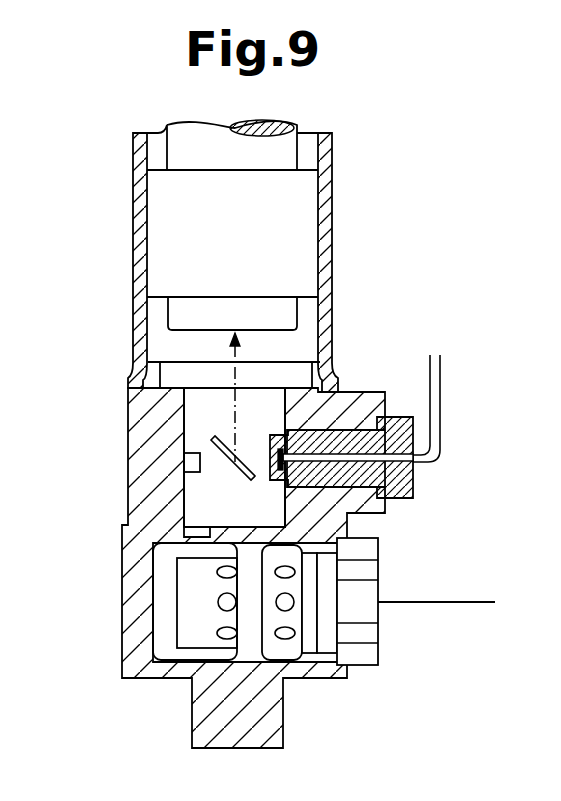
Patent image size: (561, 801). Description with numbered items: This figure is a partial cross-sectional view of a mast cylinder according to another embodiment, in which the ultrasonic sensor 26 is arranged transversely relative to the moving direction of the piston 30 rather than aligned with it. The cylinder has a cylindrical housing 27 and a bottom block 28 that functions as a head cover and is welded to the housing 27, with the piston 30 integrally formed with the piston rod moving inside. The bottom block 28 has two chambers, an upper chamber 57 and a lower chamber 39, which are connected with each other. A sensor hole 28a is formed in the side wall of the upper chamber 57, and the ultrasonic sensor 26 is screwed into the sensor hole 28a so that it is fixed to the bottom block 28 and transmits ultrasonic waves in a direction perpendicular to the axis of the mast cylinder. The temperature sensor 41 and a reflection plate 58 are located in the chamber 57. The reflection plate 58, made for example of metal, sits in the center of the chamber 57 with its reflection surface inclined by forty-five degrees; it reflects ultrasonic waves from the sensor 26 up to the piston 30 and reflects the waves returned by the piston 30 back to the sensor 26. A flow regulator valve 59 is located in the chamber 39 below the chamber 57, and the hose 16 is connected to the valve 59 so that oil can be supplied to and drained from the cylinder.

The hose 16 is at (432, 602).
The ultrasonic sensor 26 is at (262, 443).
The cylindrical housing 27 is at (140, 210).
The bottom block 28 is at (122, 604).
The sensor hole 28a is at (358, 420).
The piston 30 is at (160, 272).
The sensor chamber 39 is at (160, 636).
The temperature sensor 41 is at (187, 458).
The upper chamber 57 is at (200, 428).
The reflection plate 58 is at (218, 453).
The flow regulator valve 59 is at (378, 645).